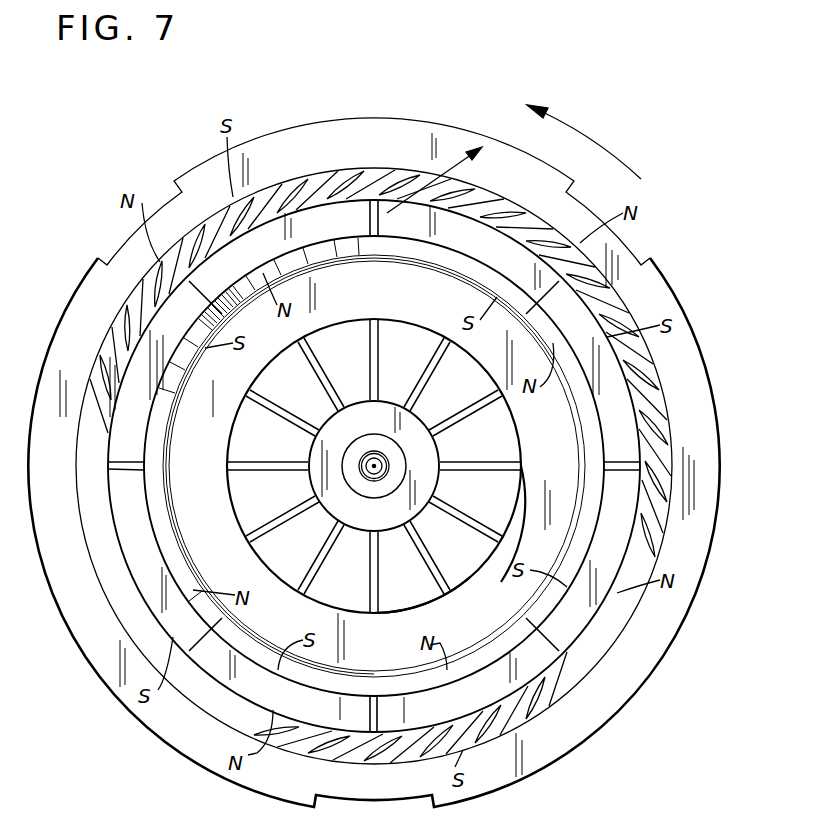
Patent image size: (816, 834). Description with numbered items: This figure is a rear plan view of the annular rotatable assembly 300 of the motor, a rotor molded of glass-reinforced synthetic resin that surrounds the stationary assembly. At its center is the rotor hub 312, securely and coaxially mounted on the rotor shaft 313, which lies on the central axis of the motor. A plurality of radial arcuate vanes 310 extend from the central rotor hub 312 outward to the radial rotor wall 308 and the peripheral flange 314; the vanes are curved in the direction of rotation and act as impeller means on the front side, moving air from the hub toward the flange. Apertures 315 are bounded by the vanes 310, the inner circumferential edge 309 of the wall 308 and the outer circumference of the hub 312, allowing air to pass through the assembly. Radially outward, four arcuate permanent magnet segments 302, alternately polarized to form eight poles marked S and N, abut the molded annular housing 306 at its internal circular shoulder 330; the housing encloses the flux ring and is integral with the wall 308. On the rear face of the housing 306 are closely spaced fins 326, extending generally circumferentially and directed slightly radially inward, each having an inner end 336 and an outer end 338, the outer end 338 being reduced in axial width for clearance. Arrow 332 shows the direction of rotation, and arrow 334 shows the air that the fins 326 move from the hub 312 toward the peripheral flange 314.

The rotatable assembly 300 is at (686, 233).
The permanent magnet segments 302 is at (263, 267).
The molded annular housing 306 is at (123, 320).
The radial rotor wall 308 is at (446, 307).
The inner circumferential edge 309 is at (486, 566).
The radial arcuate vanes 310 is at (295, 418).
The central rotor hub 312 is at (438, 449).
The rotor shaft 313 is at (366, 467).
The peripheral flange 314 is at (202, 168).
The apertures 315 is at (420, 603).
The fins 326 is at (312, 185).
The internal circular shoulder 330 is at (342, 247).
The arrow 332 is at (596, 140).
The arrow 334 is at (436, 177).
The inner end 336 is at (363, 188).
The outer end 338 is at (400, 180).